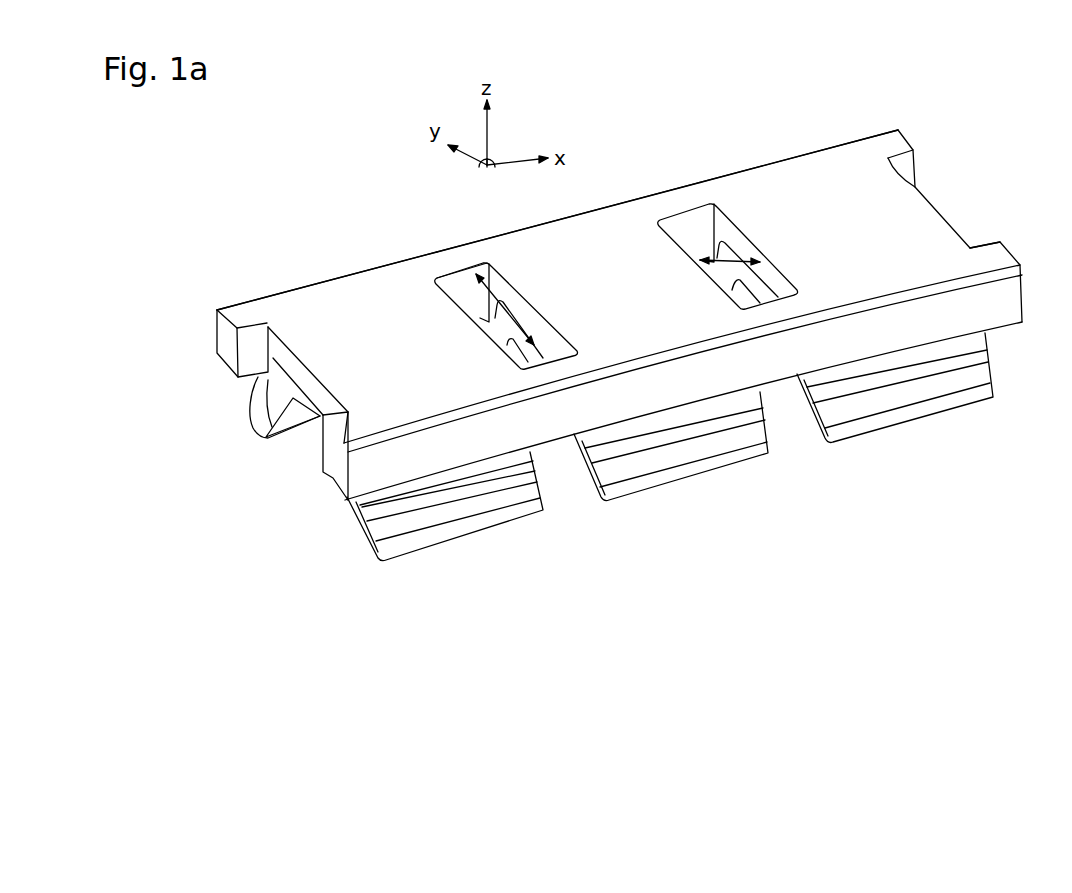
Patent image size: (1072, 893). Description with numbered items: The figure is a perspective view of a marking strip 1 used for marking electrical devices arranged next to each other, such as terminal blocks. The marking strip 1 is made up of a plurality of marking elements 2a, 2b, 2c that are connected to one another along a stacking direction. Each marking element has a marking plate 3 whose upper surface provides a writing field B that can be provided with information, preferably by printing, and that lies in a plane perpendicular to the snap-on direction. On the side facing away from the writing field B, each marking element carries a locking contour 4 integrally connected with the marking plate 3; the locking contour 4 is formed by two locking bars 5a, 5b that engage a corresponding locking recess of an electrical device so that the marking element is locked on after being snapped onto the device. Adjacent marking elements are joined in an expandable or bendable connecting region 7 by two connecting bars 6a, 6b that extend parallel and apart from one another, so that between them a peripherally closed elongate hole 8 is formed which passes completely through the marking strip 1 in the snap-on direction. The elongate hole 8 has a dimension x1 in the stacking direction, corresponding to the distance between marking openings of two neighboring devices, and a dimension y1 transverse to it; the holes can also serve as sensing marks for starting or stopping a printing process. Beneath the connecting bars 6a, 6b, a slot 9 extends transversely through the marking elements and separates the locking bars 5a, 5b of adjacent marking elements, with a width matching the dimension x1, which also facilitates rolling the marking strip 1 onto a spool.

The marking strip 1 is at (820, 140).
The marking element 2a is at (318, 290).
The marking element 2b is at (600, 205).
The marking element 2c is at (763, 165).
The marking plate 3 is at (977, 310).
The locking contour 4 is at (313, 419).
The locking bar 5a is at (270, 433).
The locking bar 5b is at (408, 525).
The connecting bar 6a is at (447, 258).
The connecting bar 6b is at (330, 480).
The connecting region 7 is at (660, 190).
The elongate hole 8 is at (686, 232).
The slot 9 is at (360, 550).
The writing field B is at (348, 326).
The dimension of elongate hole in stacking direction x1 is at (735, 236).
The dimension of elongate hole transverse to stacking direction y1 is at (482, 291).